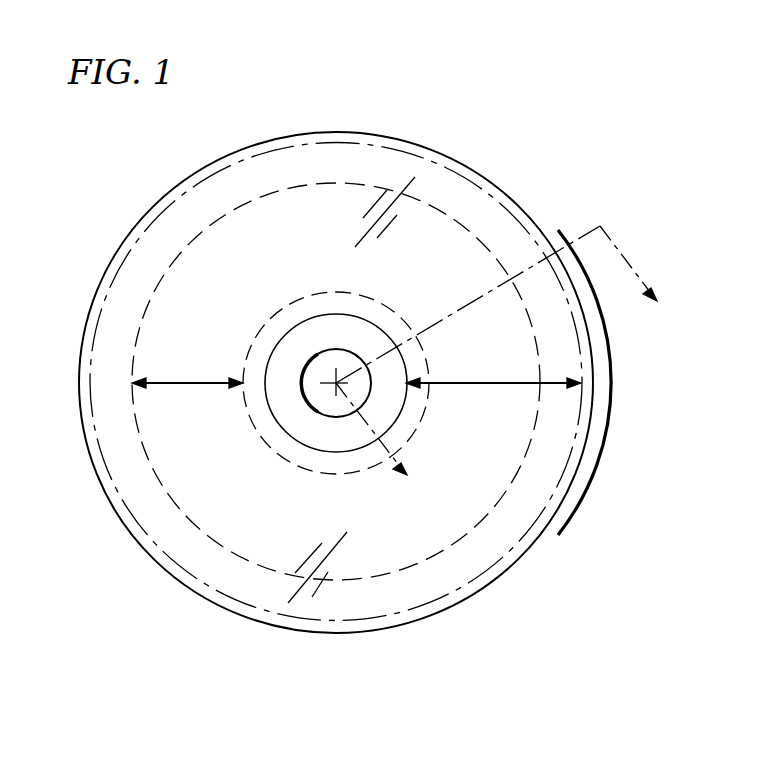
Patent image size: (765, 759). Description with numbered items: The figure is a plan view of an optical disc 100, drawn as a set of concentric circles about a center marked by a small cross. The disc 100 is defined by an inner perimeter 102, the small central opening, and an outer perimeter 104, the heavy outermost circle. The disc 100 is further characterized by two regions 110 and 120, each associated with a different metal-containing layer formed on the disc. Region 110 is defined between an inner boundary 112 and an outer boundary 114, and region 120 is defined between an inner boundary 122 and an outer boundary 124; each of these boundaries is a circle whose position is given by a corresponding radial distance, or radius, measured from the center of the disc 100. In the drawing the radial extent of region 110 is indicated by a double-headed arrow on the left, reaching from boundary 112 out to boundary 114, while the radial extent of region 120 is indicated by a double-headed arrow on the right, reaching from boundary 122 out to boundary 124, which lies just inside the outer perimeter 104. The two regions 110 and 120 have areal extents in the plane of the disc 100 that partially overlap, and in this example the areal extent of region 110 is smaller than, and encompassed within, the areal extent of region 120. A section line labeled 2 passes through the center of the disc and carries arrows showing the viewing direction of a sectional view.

The optical disc 100 is at (561, 99).
The inner perimeter 102 is at (323, 413).
The outer perimeter 104 is at (340, 132).
The region 110 is at (187, 370).
The inner boundary 112 is at (300, 297).
The outer boundary 114 is at (147, 452).
The region 120 is at (493, 371).
The inner boundary 122 is at (390, 427).
The outer boundary 124 is at (566, 452).
The section line 2- 2 is at (502, 365).